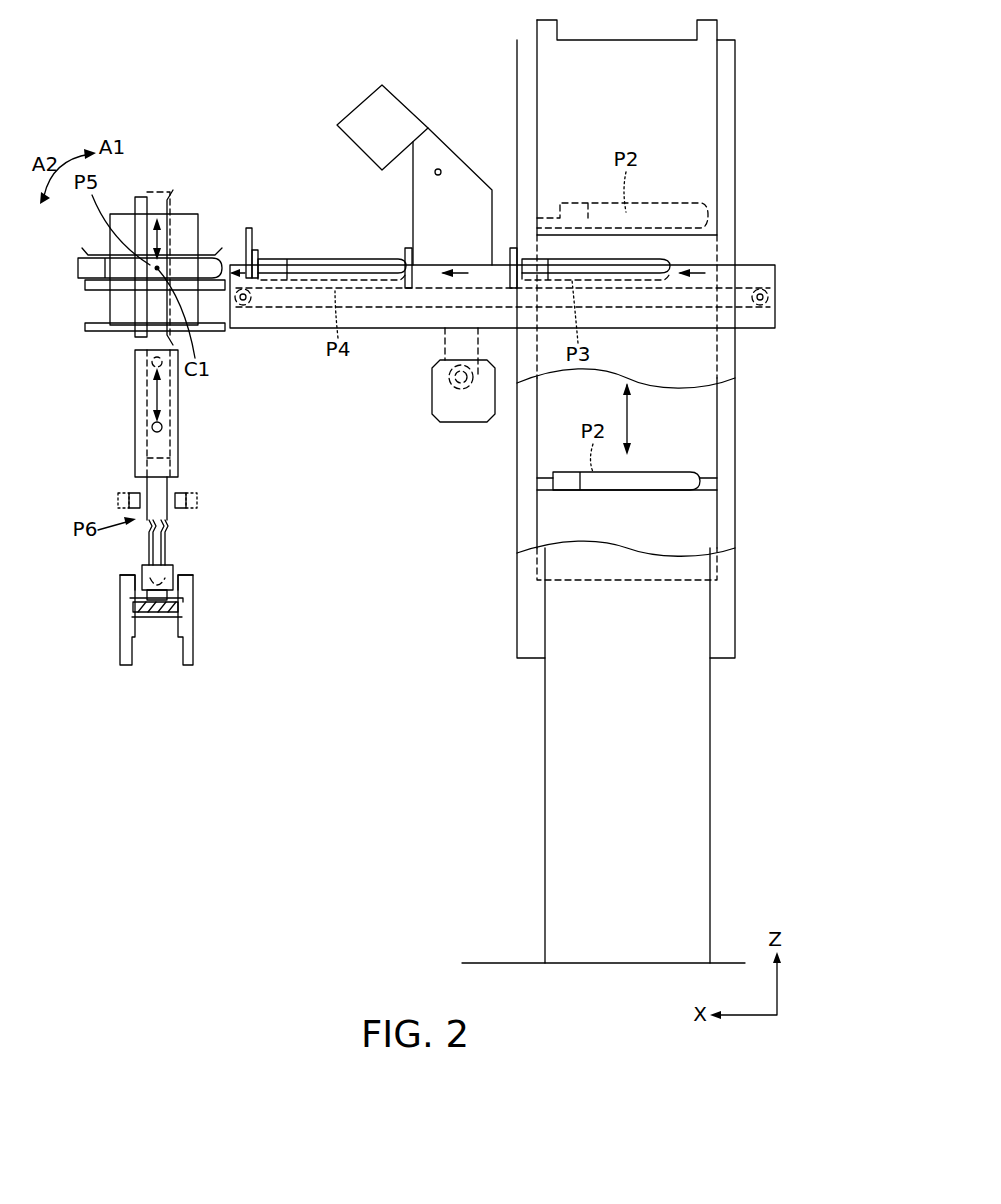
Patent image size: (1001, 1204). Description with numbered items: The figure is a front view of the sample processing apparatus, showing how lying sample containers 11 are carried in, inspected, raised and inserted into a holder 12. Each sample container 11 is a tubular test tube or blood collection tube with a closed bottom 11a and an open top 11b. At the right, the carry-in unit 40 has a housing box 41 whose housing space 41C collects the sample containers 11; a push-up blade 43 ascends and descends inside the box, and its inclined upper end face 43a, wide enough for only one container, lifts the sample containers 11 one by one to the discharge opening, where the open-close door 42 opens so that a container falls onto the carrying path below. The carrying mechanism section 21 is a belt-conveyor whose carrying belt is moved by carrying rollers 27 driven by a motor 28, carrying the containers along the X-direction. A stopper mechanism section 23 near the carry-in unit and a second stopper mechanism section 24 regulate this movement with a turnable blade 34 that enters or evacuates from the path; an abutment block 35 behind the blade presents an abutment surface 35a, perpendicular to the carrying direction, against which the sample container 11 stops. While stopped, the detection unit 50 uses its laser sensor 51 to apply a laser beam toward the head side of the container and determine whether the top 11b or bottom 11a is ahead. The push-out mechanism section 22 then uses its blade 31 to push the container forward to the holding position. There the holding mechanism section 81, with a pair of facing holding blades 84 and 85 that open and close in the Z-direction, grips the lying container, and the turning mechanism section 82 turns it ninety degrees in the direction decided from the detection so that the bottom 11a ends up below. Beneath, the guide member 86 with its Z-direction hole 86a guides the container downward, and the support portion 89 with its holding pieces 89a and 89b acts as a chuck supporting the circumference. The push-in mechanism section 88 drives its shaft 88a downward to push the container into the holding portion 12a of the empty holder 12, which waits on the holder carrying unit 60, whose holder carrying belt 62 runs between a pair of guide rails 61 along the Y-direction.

The sample container 11 is at (140, 258).
The bottom 11a is at (220, 262).
The top 11b is at (152, 192).
The holder 12 is at (173, 578).
The holding portion 12a is at (150, 575).
The carrying mechanism section 21 is at (370, 328).
The push-out mechanism section 22 is at (407, 248).
The stopper mechanism section 23 is at (513, 290).
The stopper mechanism section 24 is at (248, 230).
The carrying rollers 27 is at (242, 305).
The motor 28 is at (462, 422).
The blade 31 is at (410, 290).
The blade 34 is at (512, 248).
The abutment block 35 is at (251, 280).
The abutment surface 35a is at (258, 280).
The carry-in unit 40 is at (738, 100).
The housing box 41 is at (738, 380).
The housing space 41C is at (718, 420).
The open-close door 42 is at (717, 152).
The push-up blade 43 is at (705, 492).
The upper end face 43a is at (700, 476).
The detection unit 50 is at (455, 160).
The laser sensor 51 is at (360, 152).
The holder carrying unit 60 is at (193, 640).
The guide rails 61 is at (120, 578).
The holder carrying belt 62 is at (155, 607).
The holding mechanism section 81 is at (85, 265).
The turning mechanism section 82 is at (192, 214).
The holding blade 84 is at (150, 225).
The holding blade 85 is at (135, 305).
The guide member 86 is at (135, 398).
The hole 86a is at (178, 395).
The push-in mechanism section 88 is at (163, 427).
The shaft 88a is at (152, 360).
The support portion 89 is at (190, 493).
The holding piece 89a is at (190, 505).
The holding piece 89b is at (118, 500).